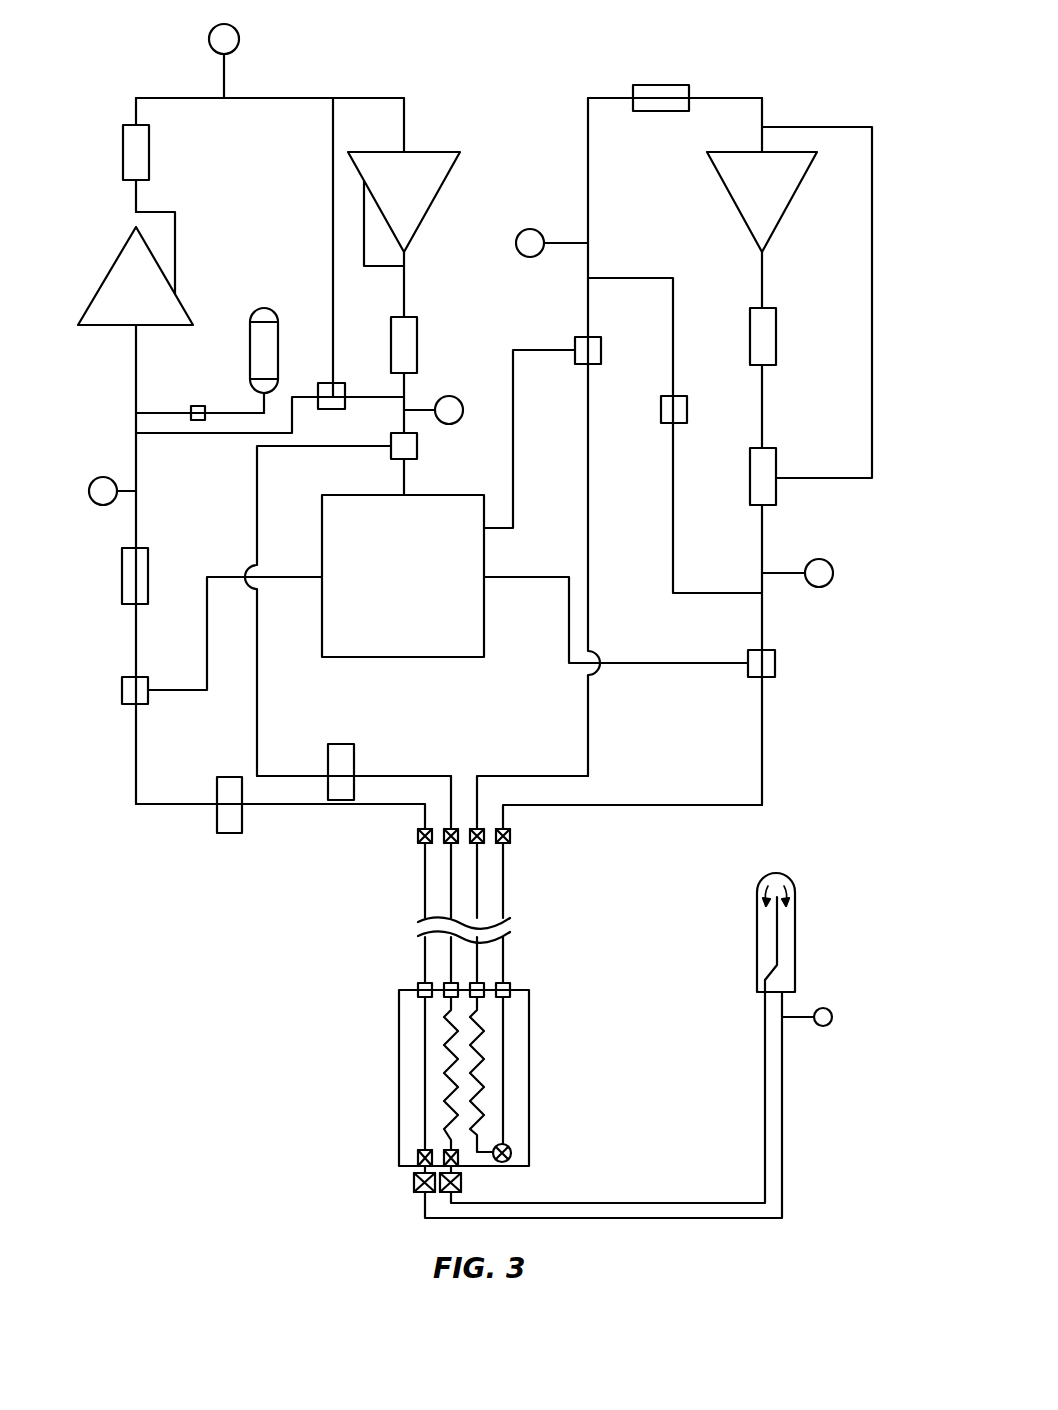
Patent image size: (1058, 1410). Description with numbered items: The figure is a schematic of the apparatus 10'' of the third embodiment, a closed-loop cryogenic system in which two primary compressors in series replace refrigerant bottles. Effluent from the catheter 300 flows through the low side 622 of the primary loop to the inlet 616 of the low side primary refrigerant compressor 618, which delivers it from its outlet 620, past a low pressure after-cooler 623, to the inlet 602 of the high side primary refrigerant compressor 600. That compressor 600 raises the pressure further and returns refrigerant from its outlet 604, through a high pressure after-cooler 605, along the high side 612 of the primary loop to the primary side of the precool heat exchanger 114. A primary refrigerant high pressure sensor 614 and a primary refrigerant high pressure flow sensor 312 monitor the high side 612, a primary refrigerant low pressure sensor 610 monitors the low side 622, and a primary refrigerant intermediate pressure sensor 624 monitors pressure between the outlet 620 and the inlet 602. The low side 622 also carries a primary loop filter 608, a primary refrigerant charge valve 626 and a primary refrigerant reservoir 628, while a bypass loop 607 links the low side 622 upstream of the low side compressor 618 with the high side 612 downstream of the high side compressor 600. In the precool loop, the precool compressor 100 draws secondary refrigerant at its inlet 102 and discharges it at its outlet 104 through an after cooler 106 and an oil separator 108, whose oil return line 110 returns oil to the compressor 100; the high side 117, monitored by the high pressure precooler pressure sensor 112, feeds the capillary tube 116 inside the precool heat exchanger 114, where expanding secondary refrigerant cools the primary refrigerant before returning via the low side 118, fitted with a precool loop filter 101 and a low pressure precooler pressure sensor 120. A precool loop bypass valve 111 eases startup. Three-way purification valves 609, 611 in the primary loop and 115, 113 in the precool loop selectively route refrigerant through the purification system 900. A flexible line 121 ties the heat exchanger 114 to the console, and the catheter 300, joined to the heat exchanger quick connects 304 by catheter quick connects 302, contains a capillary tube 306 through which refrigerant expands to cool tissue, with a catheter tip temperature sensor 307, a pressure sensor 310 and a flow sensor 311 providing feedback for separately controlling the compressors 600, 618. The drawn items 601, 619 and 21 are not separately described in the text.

The apparatus 10'' is at (830, 19).
The supply line 21 is at (456, 856).
The precool compressor 100 is at (726, 192).
The precool loop filter 101 is at (660, 85).
The inlet of the precool compressor 102 is at (762, 141).
The outlet of the precool compressor 104 is at (762, 279).
The after cooler 106 is at (776, 335).
The oil separator 108 is at (776, 465).
The oil return line 110 is at (872, 276).
The precool loop bypass valve 111 is at (680, 396).
The high pressure precooler pressure sensor 112 is at (819, 559).
The purification valve 113 is at (595, 337).
The precool heat exchanger 114 is at (529, 1060).
The purification valve 115 is at (775, 661).
The capillary tube 116 is at (511, 1153).
The high side of the precool loop 117 is at (653, 805).
The low side of the precool loop 118 is at (505, 776).
The low pressure precooler pressure sensor 120 is at (530, 229).
The flexible line 121 is at (477, 856).
The catheter 300 is at (795, 930).
The catheter quick connects 302 is at (451, 1195).
The heat exchanger quick connects 304 is at (448, 1150).
The capillary tube 306 is at (775, 918).
The catheter tip temperature sensor 307 is at (776, 873).
The pressure sensor 310 is at (823, 1026).
The flow sensor 311 is at (228, 833).
The primary refrigerant high pressure flow sensor 312 is at (340, 744).
The high side primary refrigerant compressor 600 is at (440, 152).
The compressor housing 601 is at (396, 270).
The inlet of the high side compressor 602 is at (366, 98).
The outlet of the high side compressor 604 is at (404, 288).
The high pressure after-cooler 605 is at (417, 331).
The bypass loop 607 is at (200, 435).
The primary loop filter 608 is at (148, 560).
The purification valve 609 is at (417, 446).
The primary refrigerant low pressure sensor 610 is at (103, 477).
The purification valve 611 is at (122, 684).
The high side of the primary loop 612 is at (405, 776).
The primary refrigerant high pressure sensor 614 is at (454, 397).
The inlet of the low side compressor 616 is at (136, 357).
The low side primary refrigerant compressor 618 is at (110, 266).
The expander housing 619 is at (175, 250).
The outlet of the low side compressor 620 is at (136, 196).
The low side of the primary loop 622 is at (316, 804).
The low pressure after-cooler 623 is at (149, 148).
The primary refrigerant intermediate pressure sensor 624 is at (239, 40).
The primary refrigerant charge valve 626 is at (197, 406).
The primary refrigerant reservoir 628 is at (250, 352).
The purification system 900 is at (440, 657).